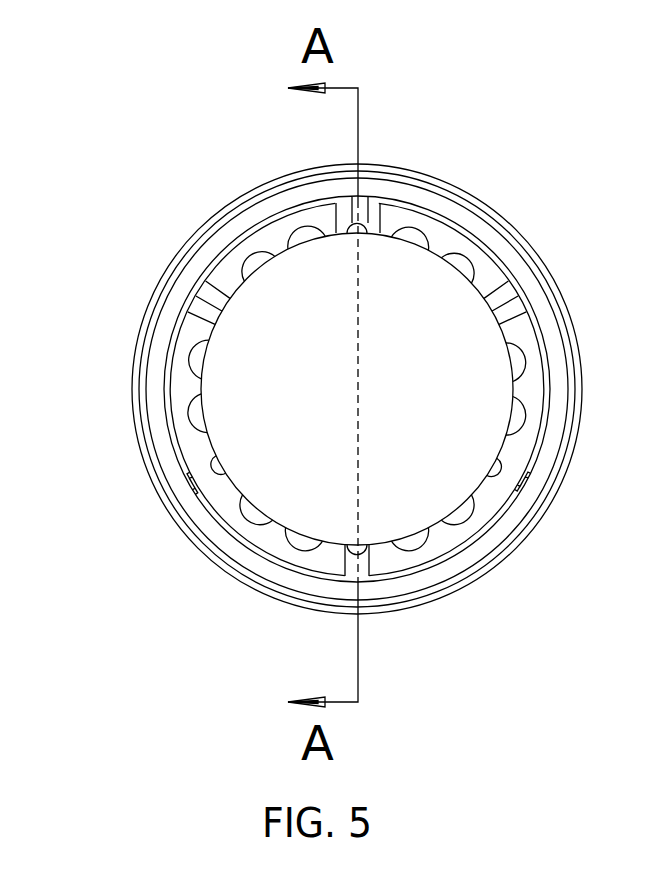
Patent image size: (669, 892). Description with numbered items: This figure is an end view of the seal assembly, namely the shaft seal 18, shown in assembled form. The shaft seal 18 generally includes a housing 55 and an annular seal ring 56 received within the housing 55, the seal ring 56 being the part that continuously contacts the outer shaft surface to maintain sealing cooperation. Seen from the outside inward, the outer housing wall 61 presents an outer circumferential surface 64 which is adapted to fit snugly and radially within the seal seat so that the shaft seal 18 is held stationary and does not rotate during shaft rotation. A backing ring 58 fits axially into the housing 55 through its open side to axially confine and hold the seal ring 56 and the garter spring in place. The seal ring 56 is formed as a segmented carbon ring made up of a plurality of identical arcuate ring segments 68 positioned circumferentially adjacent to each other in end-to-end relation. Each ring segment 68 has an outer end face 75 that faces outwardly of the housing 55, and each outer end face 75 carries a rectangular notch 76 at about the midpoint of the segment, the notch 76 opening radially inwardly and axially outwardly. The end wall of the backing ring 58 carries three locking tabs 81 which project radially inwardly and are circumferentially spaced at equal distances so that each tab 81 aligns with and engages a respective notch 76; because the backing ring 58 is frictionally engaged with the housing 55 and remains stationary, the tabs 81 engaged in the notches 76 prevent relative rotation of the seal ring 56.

The shaft seal 18 is at (78, 151).
The housing 55 is at (483, 192).
The annular seal ring 56 is at (536, 320).
The backing ring 58 is at (492, 228).
The outer housing wall 61 is at (403, 174).
The outer circumferential surface 64 is at (228, 205).
The arcuate ring segments 68 is at (487, 268).
The outer end face 75 is at (528, 389).
The rectangular notch 76 is at (364, 226).
The locking tabs 81 is at (364, 205).